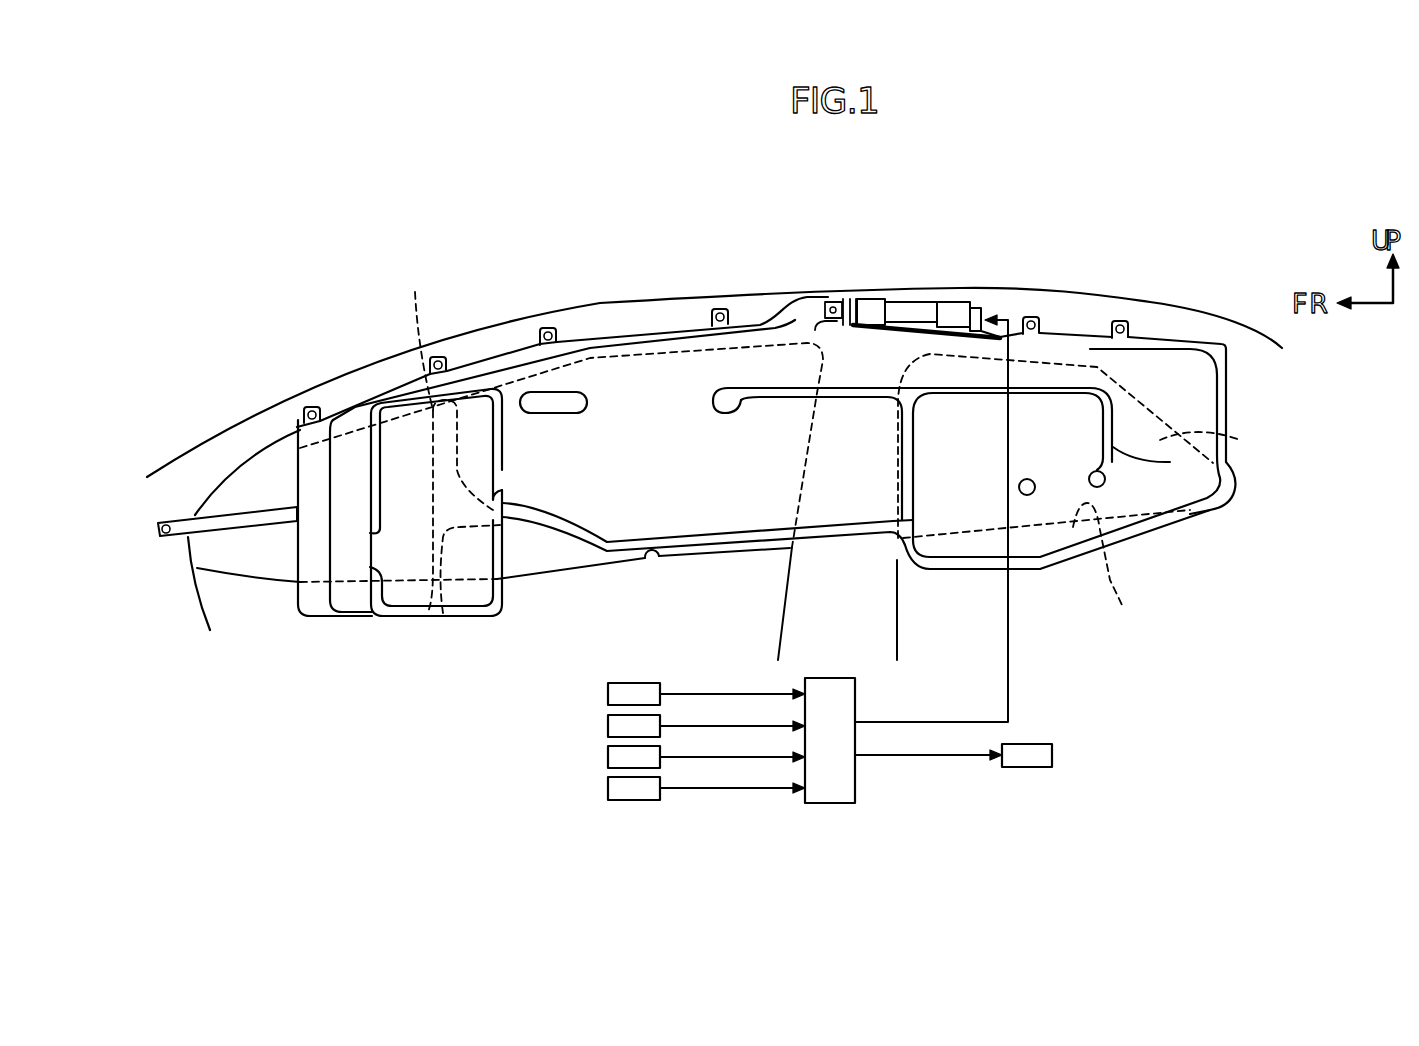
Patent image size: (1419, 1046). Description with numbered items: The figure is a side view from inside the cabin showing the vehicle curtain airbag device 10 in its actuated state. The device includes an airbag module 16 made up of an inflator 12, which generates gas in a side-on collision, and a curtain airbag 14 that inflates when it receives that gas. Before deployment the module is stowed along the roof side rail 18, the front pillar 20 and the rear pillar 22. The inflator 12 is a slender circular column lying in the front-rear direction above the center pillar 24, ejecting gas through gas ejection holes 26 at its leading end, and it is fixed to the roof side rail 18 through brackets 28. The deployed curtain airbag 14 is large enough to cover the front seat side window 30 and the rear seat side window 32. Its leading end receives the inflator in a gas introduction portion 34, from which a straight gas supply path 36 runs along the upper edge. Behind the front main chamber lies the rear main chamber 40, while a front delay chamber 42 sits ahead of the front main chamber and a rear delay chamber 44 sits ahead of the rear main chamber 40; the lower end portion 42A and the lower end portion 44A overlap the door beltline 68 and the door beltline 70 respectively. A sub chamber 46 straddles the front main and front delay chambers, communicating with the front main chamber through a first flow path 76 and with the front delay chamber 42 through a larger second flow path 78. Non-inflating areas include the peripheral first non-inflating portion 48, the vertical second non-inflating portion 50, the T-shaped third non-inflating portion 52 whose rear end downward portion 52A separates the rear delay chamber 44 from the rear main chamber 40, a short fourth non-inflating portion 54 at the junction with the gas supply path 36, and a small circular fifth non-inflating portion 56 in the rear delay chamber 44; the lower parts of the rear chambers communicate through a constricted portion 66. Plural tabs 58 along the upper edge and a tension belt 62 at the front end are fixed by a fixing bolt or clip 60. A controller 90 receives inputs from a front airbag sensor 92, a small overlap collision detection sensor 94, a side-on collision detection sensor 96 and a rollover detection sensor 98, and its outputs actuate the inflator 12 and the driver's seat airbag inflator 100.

The vehicle curtain airbag device 10 is at (716, 274).
The inflator 12 is at (910, 303).
The curtain airbag 14 is at (279, 547).
The airbag module 16 is at (926, 331).
The roof side rail 18 is at (667, 313).
The front pillar 20 is at (257, 443).
The rear pillar 22 is at (1243, 350).
The center pillar 24 is at (803, 603).
The gas ejection holes 26 is at (835, 300).
The brackets 28 is at (878, 299).
The side window 30 is at (550, 552).
The side window 32 is at (1240, 440).
The gas introduction portion 34 is at (797, 307).
The gas supply path 36 is at (803, 360).
The rear main chamber 40 is at (1153, 485).
The front delay chamber 42 is at (358, 432).
The lower end portion 42A is at (352, 600).
The rear delay chamber 44 is at (943, 493).
The lower end portion 44A is at (980, 545).
The sub chamber 46 is at (473, 593).
The first non-inflating portion 48 is at (1220, 392).
The second non-inflating portion 50 is at (561, 433).
The third non-inflating portion 52 is at (1057, 383).
The rear end downward portion 52A is at (1170, 462).
The fourth non-inflating portion 54 is at (575, 400).
The fifth non-inflating portion 56 is at (1033, 496).
The tabs 58 is at (301, 407).
The fixing bolt or clip 60 is at (316, 408).
The tension belt 62 is at (208, 525).
The constricted portion 66 is at (1123, 530).
The door beltline 68 is at (660, 562).
The door beltline 70 is at (1113, 570).
The first flow path 76 is at (503, 478).
The second flow path 78 is at (373, 546).
The controller 90 is at (858, 690).
The front airbag sensor 92 is at (608, 694).
The small overlap collision detection sensor 94 is at (608, 726).
The side-on collision detection sensor 96 is at (608, 757).
The rollover detection sensor 98 is at (608, 788).
The inflator 100 is at (1052, 755).